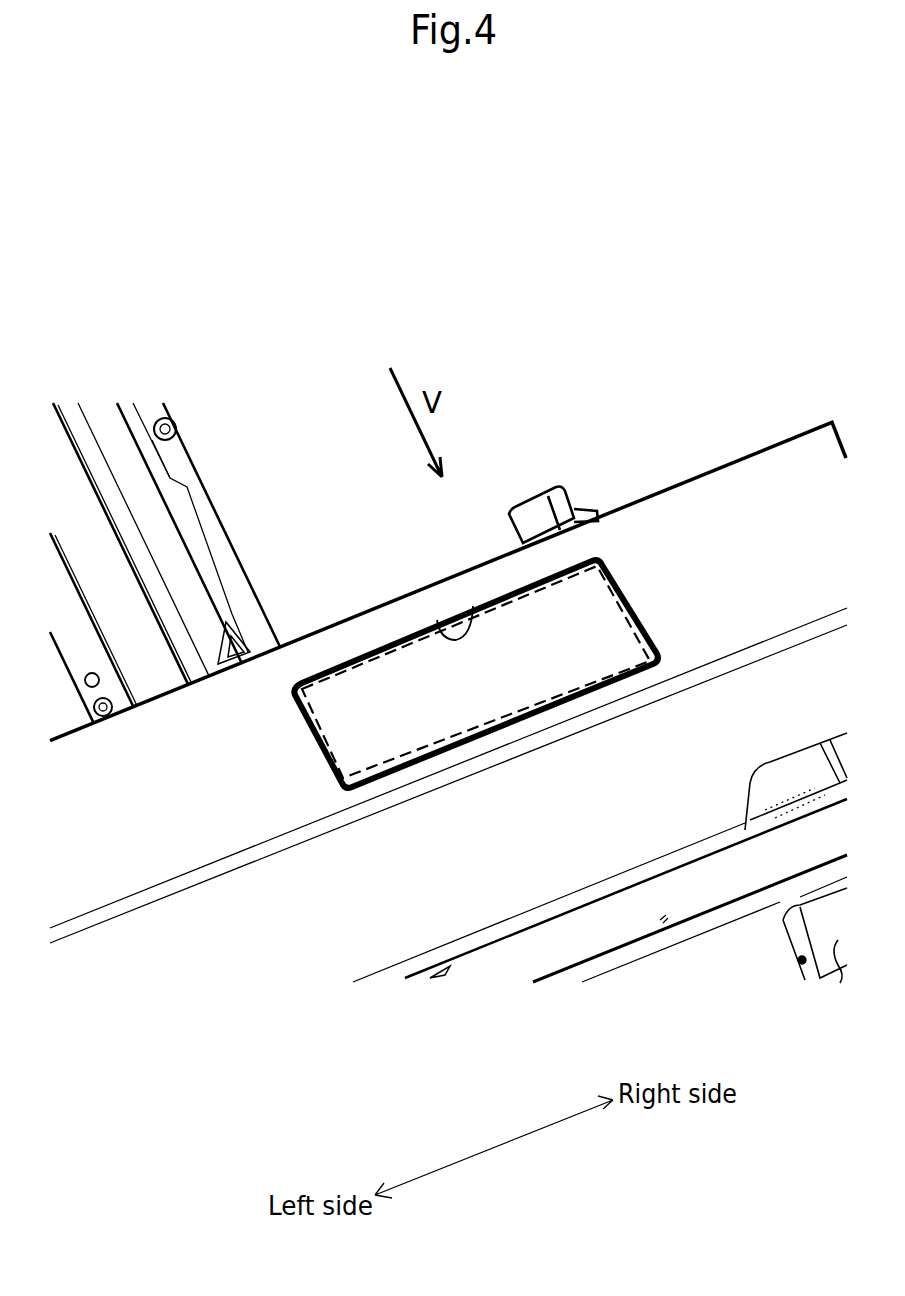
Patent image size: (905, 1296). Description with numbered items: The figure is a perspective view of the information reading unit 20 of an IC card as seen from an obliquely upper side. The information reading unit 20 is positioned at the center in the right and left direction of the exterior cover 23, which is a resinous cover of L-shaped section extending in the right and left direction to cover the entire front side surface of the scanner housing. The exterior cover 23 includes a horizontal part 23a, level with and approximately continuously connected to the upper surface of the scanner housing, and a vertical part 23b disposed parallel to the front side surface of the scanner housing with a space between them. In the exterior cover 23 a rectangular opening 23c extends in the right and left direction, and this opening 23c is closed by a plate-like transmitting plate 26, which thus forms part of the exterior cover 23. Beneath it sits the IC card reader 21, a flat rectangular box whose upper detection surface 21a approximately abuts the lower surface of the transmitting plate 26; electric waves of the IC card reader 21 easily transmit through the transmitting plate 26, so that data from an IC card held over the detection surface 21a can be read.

The information reading unit 20 is at (432, 548).
The IC card reader 21 is at (492, 587).
The detection surface 21a is at (580, 610).
The exterior cover 23 is at (448, 772).
The horizontal part 23a is at (170, 808).
The vertical part 23b is at (273, 920).
The rectangular opening 23c is at (445, 625).
The transmitting plate 26 is at (501, 588).